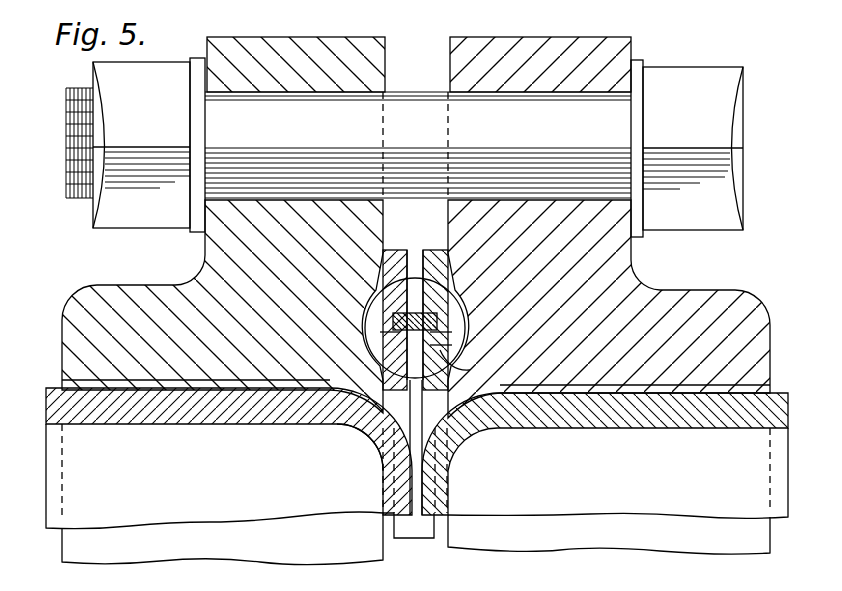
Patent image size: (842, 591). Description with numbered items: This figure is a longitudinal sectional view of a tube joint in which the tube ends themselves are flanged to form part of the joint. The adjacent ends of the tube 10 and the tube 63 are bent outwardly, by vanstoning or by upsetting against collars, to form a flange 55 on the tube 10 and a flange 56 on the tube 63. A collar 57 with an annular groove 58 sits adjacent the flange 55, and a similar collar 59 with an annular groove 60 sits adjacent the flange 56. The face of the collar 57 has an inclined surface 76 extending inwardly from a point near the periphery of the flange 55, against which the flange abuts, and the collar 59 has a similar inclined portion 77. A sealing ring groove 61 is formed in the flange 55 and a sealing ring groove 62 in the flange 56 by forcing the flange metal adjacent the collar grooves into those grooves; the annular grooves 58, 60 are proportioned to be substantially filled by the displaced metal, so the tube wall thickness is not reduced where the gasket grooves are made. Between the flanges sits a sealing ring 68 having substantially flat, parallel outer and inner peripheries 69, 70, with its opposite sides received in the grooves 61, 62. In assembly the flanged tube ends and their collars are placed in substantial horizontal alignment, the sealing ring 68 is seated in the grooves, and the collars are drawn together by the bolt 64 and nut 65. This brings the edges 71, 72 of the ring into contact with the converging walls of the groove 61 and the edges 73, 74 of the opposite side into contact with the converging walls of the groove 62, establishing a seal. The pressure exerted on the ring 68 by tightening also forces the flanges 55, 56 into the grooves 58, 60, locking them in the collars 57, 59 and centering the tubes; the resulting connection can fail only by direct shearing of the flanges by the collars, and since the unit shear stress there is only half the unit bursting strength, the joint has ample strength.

The tube 10 is at (188, 428).
The tube 63 is at (633, 428).
The flange 55 is at (383, 200).
The flange 56 is at (448, 200).
The collar 57 is at (320, 58).
The collar 59 is at (631, 44).
The annular groove 58 is at (395, 320).
The annular groove 60 is at (442, 316).
The sealing ring groove 61 is at (392, 312).
The sealing ring groove 62 is at (440, 330).
The bolt 64 is at (612, 118).
The nut 65 is at (126, 222).
The sealing ring 68 is at (392, 415).
The outer periphery 69 is at (415, 300).
The inner periphery 70 is at (462, 362).
The edge 71 is at (383, 300).
The edge 72 is at (400, 331).
The edge 73 is at (450, 298).
The edge 74 is at (440, 345).
The inclined surface 76 is at (380, 268).
The inclined portion 77 is at (455, 262).